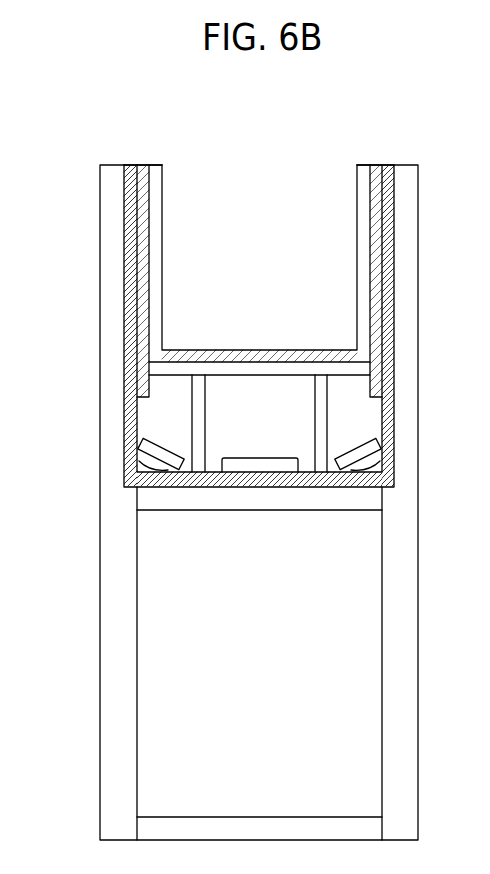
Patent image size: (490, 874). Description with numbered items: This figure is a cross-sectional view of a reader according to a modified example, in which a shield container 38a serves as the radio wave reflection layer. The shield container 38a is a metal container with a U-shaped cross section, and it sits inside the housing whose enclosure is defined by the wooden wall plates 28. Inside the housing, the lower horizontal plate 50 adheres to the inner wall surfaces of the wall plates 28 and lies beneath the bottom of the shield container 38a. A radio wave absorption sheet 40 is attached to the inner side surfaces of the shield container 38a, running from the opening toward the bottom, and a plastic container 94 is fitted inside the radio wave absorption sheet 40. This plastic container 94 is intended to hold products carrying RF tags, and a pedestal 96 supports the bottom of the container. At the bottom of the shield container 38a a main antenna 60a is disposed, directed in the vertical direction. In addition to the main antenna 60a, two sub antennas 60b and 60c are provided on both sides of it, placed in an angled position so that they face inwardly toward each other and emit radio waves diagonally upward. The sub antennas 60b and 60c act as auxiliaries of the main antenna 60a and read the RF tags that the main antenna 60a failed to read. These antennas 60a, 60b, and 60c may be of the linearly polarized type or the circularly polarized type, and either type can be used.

The wall plates 28 is at (133, 627).
The shield container 38a is at (130, 318).
The radio wave absorption sheet 40 is at (143, 220).
The horizontal plate 50 is at (348, 498).
The main antenna 60a is at (270, 483).
The sub antenna 60b is at (138, 463).
The sub antenna 60c is at (380, 463).
The plastic container 94 is at (165, 178).
The pedestal 96 is at (277, 373).